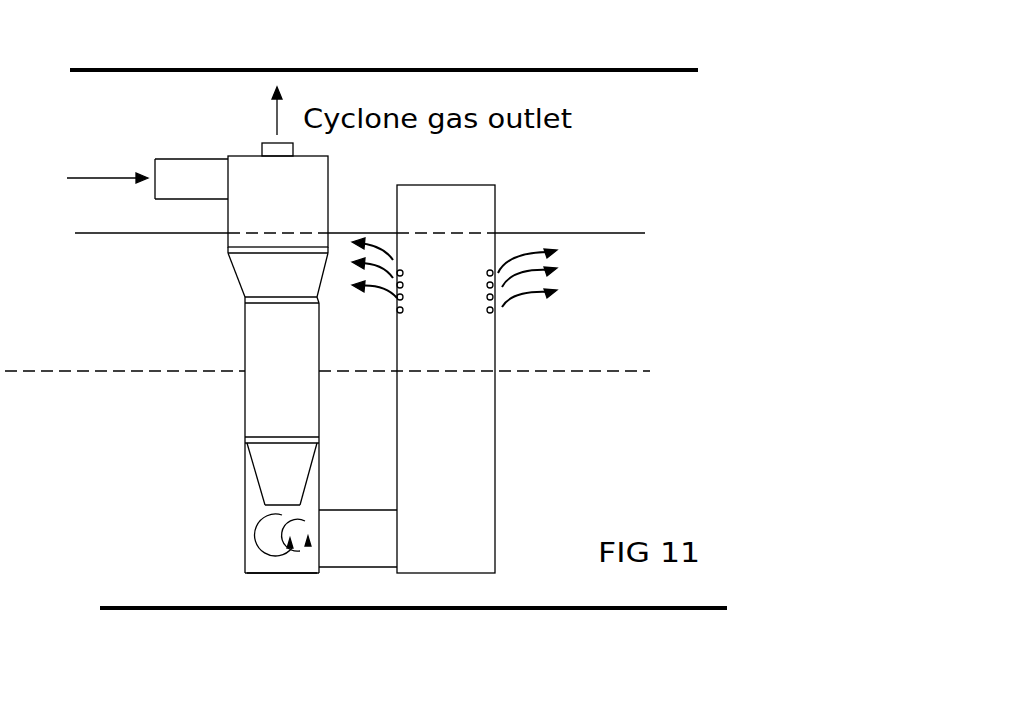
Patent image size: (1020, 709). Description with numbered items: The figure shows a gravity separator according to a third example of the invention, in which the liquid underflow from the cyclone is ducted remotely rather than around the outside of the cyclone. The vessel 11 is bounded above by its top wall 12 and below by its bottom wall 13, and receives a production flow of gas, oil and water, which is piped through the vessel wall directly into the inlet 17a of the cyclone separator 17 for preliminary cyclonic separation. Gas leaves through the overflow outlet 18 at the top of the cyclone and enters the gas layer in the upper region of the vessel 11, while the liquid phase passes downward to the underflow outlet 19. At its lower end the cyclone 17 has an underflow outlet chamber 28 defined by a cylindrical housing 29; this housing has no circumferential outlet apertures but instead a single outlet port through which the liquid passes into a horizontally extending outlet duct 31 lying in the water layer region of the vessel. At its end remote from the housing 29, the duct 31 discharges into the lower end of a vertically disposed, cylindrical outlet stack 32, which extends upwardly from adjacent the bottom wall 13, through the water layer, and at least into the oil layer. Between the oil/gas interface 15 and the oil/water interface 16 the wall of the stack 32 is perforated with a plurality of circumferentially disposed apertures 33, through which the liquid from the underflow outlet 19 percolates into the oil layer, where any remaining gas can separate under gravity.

The vessel 11 is at (660, 115).
The reactor top wall 12 is at (612, 70).
The bottom wall 13 is at (416, 654).
The oil/gas interface 15 is at (612, 233).
The oil/water interface 16 is at (613, 372).
The cyclone separator 17 is at (248, 330).
The inlet 17a is at (155, 200).
The overflow outlet 18 is at (270, 150).
The underflow outlet 19 is at (260, 532).
The underflow outlet chamber 28 is at (265, 572).
The cylindrical housing 29 is at (245, 512).
The outlet duct 31 is at (367, 546).
The outlet stack 32 is at (498, 430).
The apertures 33 is at (399, 312).